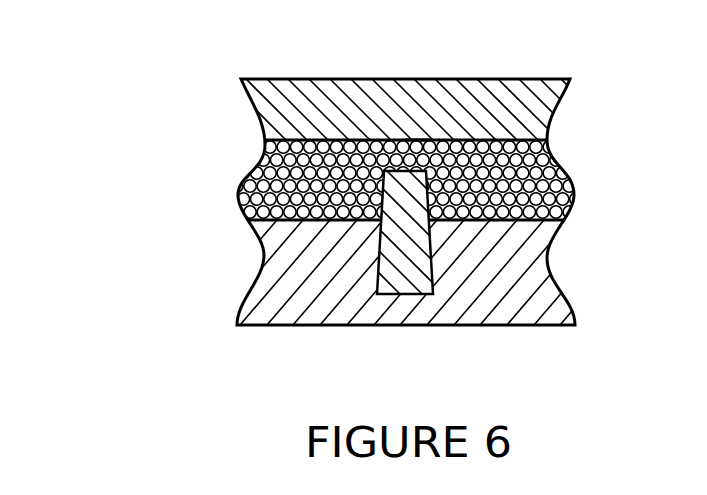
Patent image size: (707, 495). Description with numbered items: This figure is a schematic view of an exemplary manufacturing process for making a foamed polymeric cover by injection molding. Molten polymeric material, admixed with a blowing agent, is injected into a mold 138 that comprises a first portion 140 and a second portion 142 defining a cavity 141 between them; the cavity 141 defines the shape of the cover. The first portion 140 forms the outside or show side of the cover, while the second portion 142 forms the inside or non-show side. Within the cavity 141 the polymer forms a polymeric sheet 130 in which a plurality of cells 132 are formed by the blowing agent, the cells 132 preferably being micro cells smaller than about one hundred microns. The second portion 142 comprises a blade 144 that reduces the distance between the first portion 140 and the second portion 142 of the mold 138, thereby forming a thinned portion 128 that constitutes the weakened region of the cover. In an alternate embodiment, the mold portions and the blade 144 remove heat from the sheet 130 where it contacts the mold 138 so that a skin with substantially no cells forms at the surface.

The thinned portion 128 is at (382, 140).
The polymeric sheet 130 is at (561, 158).
The cells 132 is at (417, 141).
The mold 138 is at (254, 283).
The first portion 140 is at (568, 98).
The cavity 141 is at (575, 212).
The second portion 142 is at (530, 326).
The blade 144 is at (437, 243).